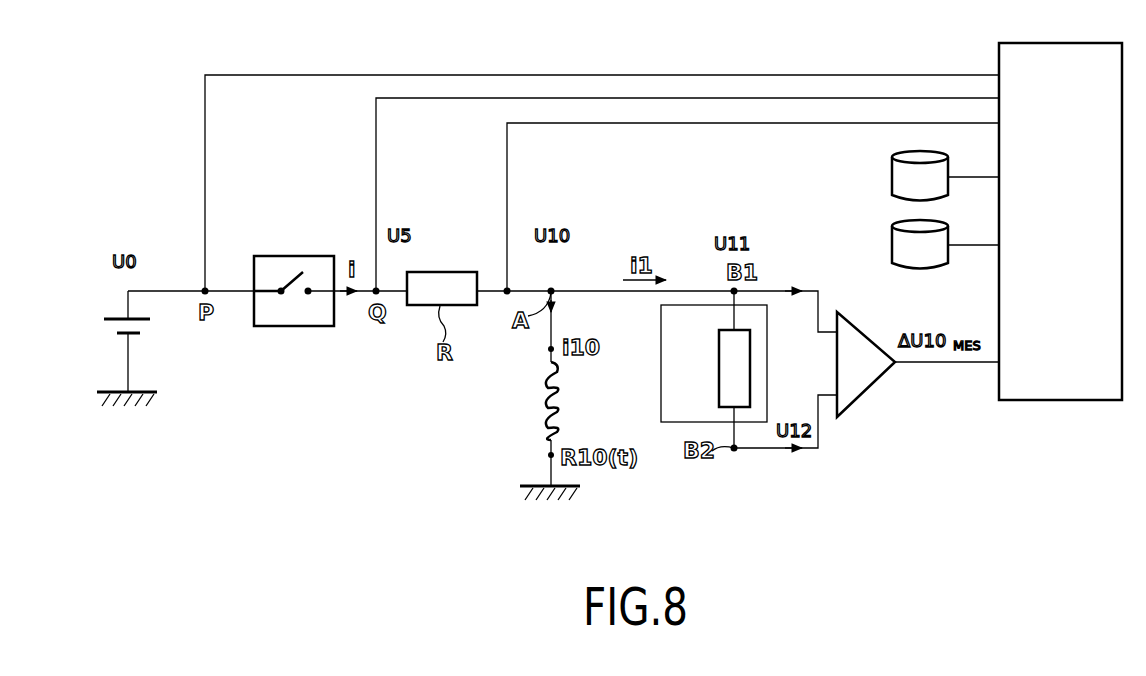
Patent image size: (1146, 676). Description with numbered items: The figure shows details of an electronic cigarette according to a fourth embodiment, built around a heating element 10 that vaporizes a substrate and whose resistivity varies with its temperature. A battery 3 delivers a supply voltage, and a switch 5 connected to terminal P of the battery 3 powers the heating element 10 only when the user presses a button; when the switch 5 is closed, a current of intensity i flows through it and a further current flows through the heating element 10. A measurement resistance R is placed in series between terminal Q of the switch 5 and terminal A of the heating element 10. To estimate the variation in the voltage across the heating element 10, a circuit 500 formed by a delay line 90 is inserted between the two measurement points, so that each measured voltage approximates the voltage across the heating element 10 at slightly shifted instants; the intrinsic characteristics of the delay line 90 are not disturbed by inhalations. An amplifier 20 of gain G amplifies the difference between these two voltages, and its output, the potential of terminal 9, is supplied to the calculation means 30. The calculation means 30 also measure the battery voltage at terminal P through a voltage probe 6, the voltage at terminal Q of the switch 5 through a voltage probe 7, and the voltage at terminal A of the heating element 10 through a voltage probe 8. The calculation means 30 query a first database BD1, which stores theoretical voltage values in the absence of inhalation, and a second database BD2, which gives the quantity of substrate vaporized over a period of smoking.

The battery 3 is at (140, 320).
The switch 5 is at (295, 256).
The voltage probe 6 is at (205, 153).
The voltage probe 7 is at (376, 153).
The voltage probe 8 is at (507, 160).
The terminal 9 is at (940, 364).
The heating element 10 is at (542, 402).
The amplifier 20 is at (868, 390).
The calculation means 30 is at (1074, 246).
The delay line 90 is at (719, 368).
The circuit 500 is at (661, 392).
The first database BD1 is at (892, 177).
The second database BD2 is at (892, 246).